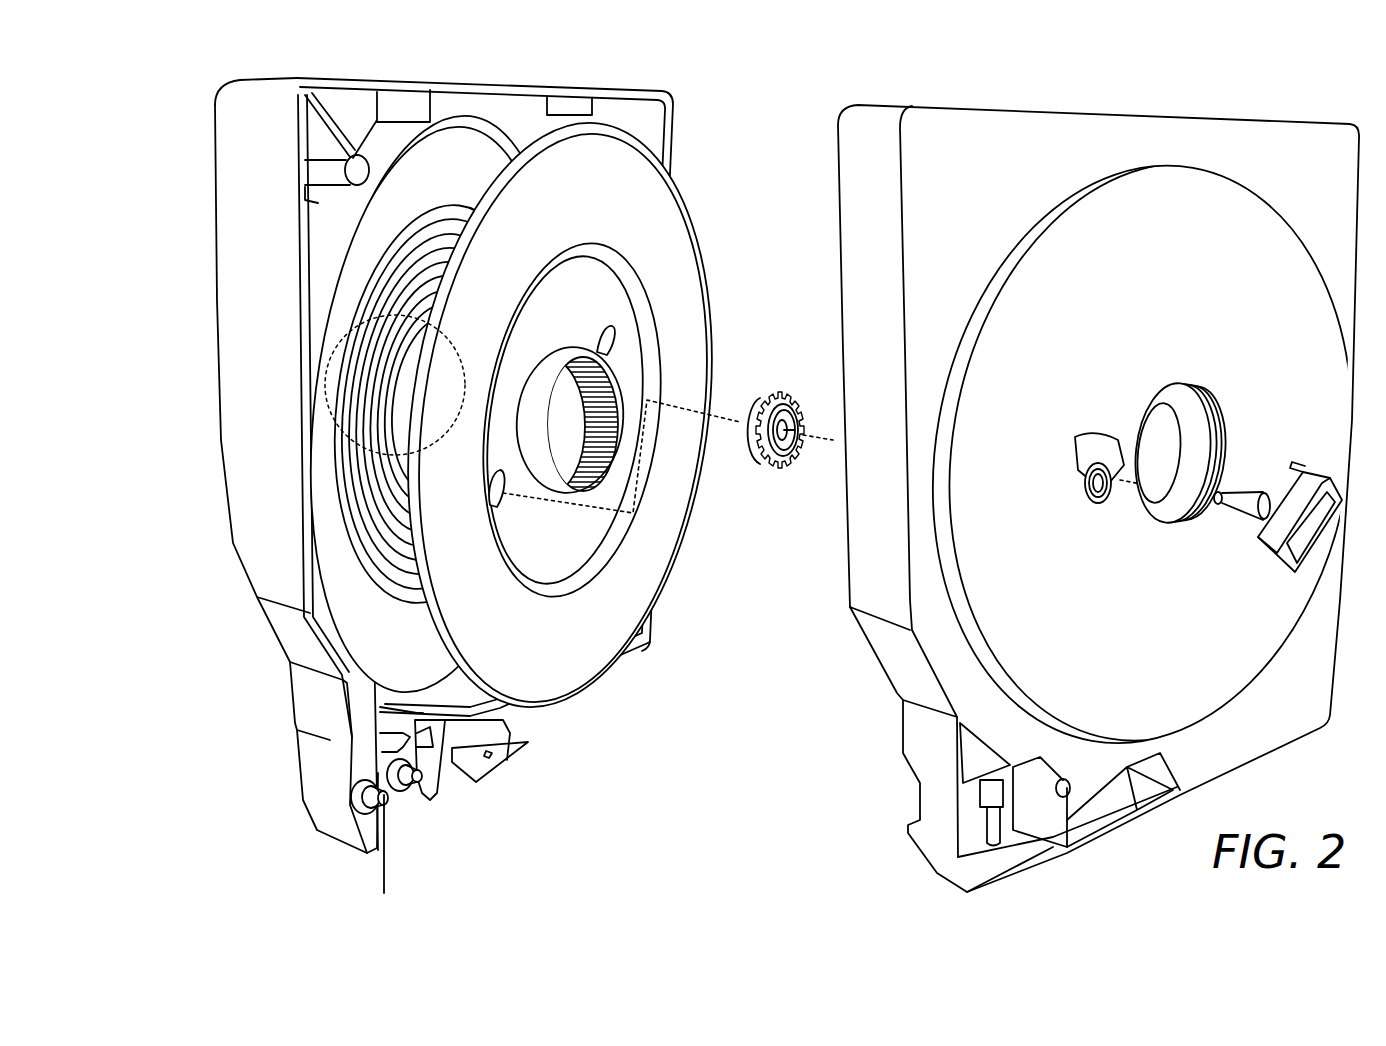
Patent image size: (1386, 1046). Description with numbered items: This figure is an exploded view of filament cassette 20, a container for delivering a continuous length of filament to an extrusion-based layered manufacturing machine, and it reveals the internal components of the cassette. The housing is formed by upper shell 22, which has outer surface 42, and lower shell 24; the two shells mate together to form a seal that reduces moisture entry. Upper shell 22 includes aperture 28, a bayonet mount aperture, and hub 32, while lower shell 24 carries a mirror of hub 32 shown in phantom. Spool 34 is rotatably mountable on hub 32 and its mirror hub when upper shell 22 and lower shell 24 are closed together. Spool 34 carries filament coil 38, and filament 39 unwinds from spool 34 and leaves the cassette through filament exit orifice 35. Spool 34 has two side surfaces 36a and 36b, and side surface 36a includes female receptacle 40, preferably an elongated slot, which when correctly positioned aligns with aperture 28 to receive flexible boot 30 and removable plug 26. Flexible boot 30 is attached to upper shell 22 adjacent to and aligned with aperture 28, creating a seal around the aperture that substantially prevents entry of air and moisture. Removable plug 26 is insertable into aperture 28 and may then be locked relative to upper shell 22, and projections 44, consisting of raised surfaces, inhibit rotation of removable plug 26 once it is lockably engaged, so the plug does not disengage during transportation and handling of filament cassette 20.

The filament cassette 20 is at (776, 111).
The upper shell 22 is at (875, 122).
The lower shell 24 is at (250, 102).
The removable plug 26 is at (1277, 552).
The aperture 28 is at (1092, 493).
The flexible boot 30 is at (787, 457).
The hub 32 is at (1183, 410).
The spool 34 is at (678, 257).
The filament exit orifice 35 is at (378, 849).
The side surface 36a is at (528, 670).
The side surface 36b is at (393, 635).
The filament coil 38 is at (357, 468).
The filament 39 is at (387, 877).
The female receptacle 40 is at (597, 335).
The outer surface 42 is at (1243, 652).
The projections 44 is at (1076, 438).